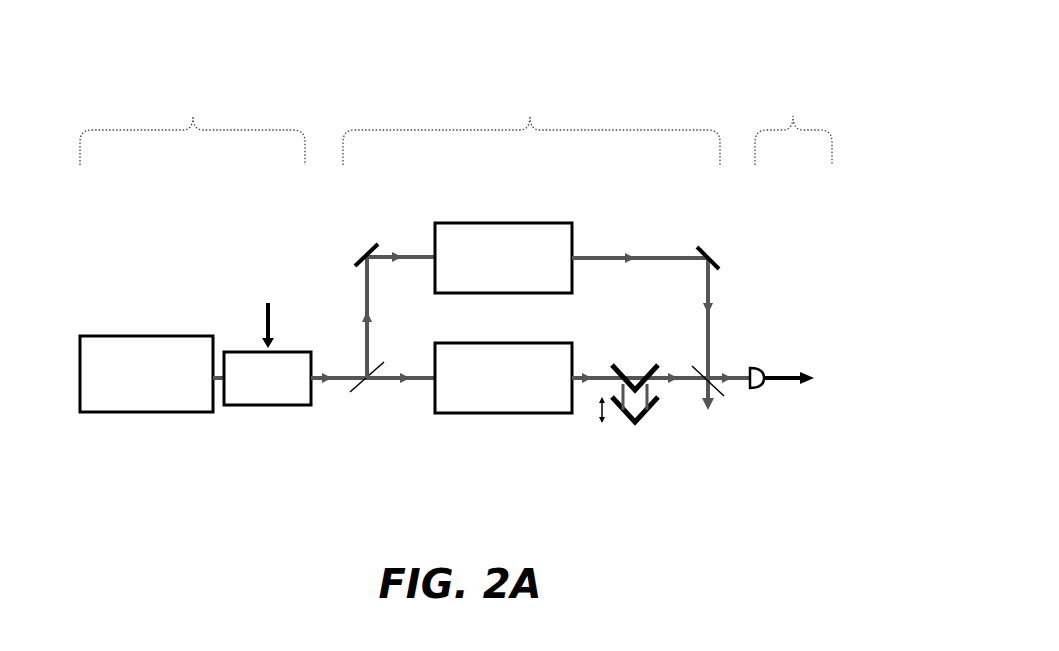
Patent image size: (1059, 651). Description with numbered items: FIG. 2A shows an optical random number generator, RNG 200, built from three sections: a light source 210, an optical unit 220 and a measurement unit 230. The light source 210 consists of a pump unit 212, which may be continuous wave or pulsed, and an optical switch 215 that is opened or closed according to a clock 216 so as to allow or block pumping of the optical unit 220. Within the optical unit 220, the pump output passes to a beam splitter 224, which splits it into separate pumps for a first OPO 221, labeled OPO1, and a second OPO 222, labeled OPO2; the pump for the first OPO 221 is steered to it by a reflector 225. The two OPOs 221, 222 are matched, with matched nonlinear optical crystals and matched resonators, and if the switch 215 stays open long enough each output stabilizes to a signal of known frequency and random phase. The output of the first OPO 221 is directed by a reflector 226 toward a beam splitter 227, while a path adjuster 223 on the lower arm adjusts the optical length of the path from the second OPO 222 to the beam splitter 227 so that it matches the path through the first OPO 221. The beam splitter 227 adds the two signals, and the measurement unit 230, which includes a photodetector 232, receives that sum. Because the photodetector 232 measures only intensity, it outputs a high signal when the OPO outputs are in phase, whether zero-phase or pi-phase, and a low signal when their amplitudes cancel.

The RNG 200 is at (662, 56).
The light source 210 is at (192, 121).
The optical unit 220 is at (531, 121).
The measurement unit 230 is at (793, 121).
The pump unit 212 is at (148, 416).
The optical switch 215 is at (260, 410).
The clock 216 is at (235, 262).
The first OPO 221 is at (532, 221).
The second OPO 222 is at (540, 418).
The path adjuster 223 is at (636, 433).
The beam splitter 224 is at (372, 396).
The reflector 225 is at (341, 250).
The reflector 226 is at (712, 244).
The beam splitter 227 is at (690, 397).
The photodetector 232 is at (776, 348).